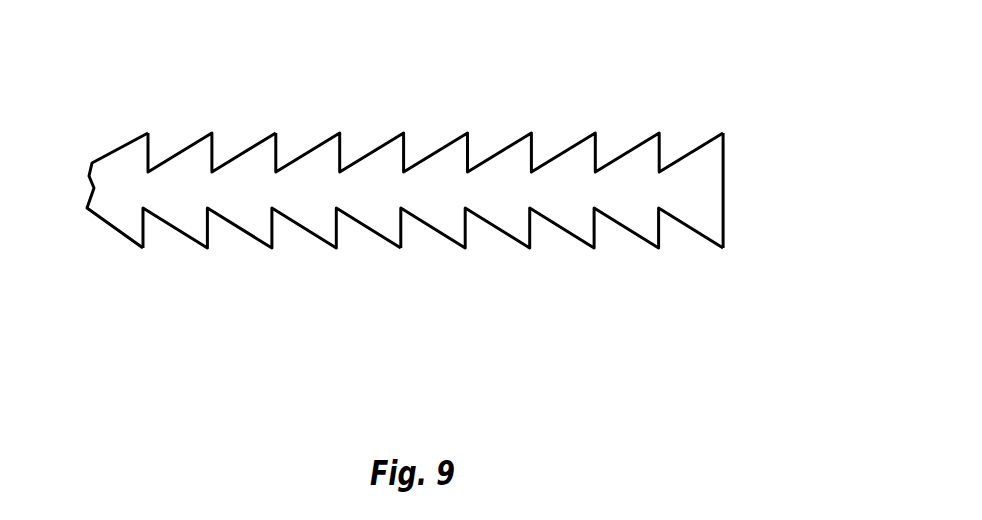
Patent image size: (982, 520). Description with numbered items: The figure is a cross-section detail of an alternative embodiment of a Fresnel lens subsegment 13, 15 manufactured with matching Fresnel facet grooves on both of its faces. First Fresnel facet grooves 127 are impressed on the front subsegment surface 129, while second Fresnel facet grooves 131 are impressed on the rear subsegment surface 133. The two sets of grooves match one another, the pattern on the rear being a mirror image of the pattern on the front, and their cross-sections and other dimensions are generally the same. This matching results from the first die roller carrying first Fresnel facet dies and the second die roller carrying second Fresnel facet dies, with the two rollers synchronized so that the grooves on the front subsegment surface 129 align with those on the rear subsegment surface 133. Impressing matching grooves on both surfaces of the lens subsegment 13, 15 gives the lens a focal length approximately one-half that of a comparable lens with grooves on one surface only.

The lens subsegment 13 is at (451, 188).
The lens subsegment 15 is at (451, 188).
The first Fresnel facet grooves 127 is at (128, 143).
The front subsegment surface 129 is at (340, 133).
The second Fresnel facet grooves 131 is at (240, 230).
The rear subsegment surface 133 is at (400, 248).